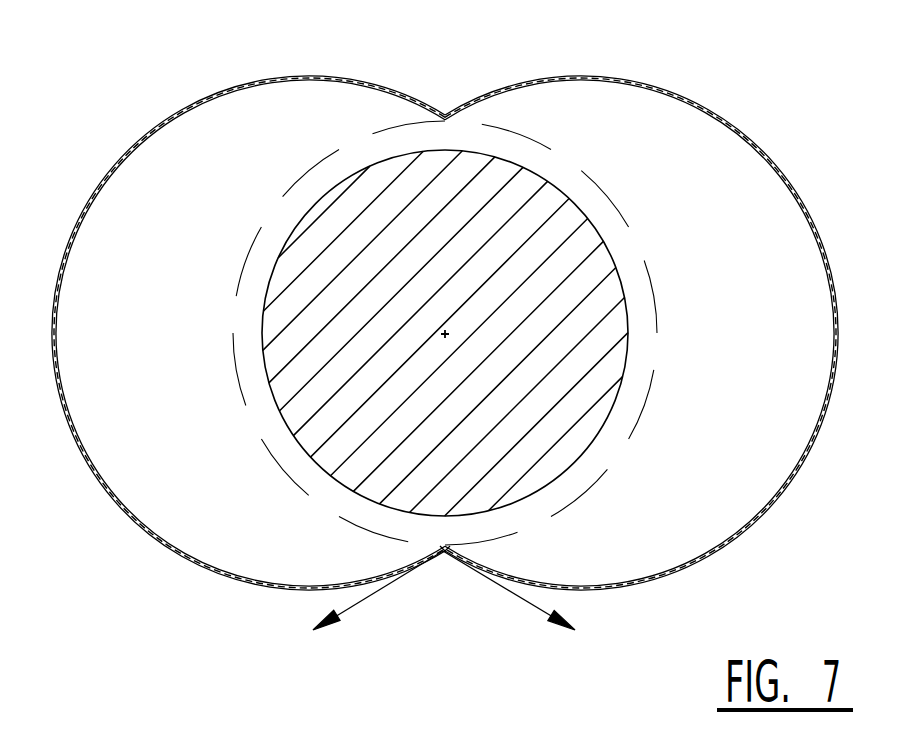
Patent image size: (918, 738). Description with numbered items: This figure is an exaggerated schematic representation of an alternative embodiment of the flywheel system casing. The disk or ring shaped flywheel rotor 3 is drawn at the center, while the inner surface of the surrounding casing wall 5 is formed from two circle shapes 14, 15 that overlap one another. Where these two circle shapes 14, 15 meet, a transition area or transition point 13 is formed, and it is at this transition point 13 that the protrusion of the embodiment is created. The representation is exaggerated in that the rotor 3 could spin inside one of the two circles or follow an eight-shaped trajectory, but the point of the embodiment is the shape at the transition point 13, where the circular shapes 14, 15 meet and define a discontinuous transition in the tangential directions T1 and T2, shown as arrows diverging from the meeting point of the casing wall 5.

The flywheel rotor 3 is at (585, 322).
The casing wall 5 is at (688, 102).
The transition point 13 is at (443, 551).
The circle shape 14 is at (753, 175).
The circle shape 15 is at (75, 263).
The tangential direction T1 is at (363, 608).
The tangential direction T2 is at (525, 608).